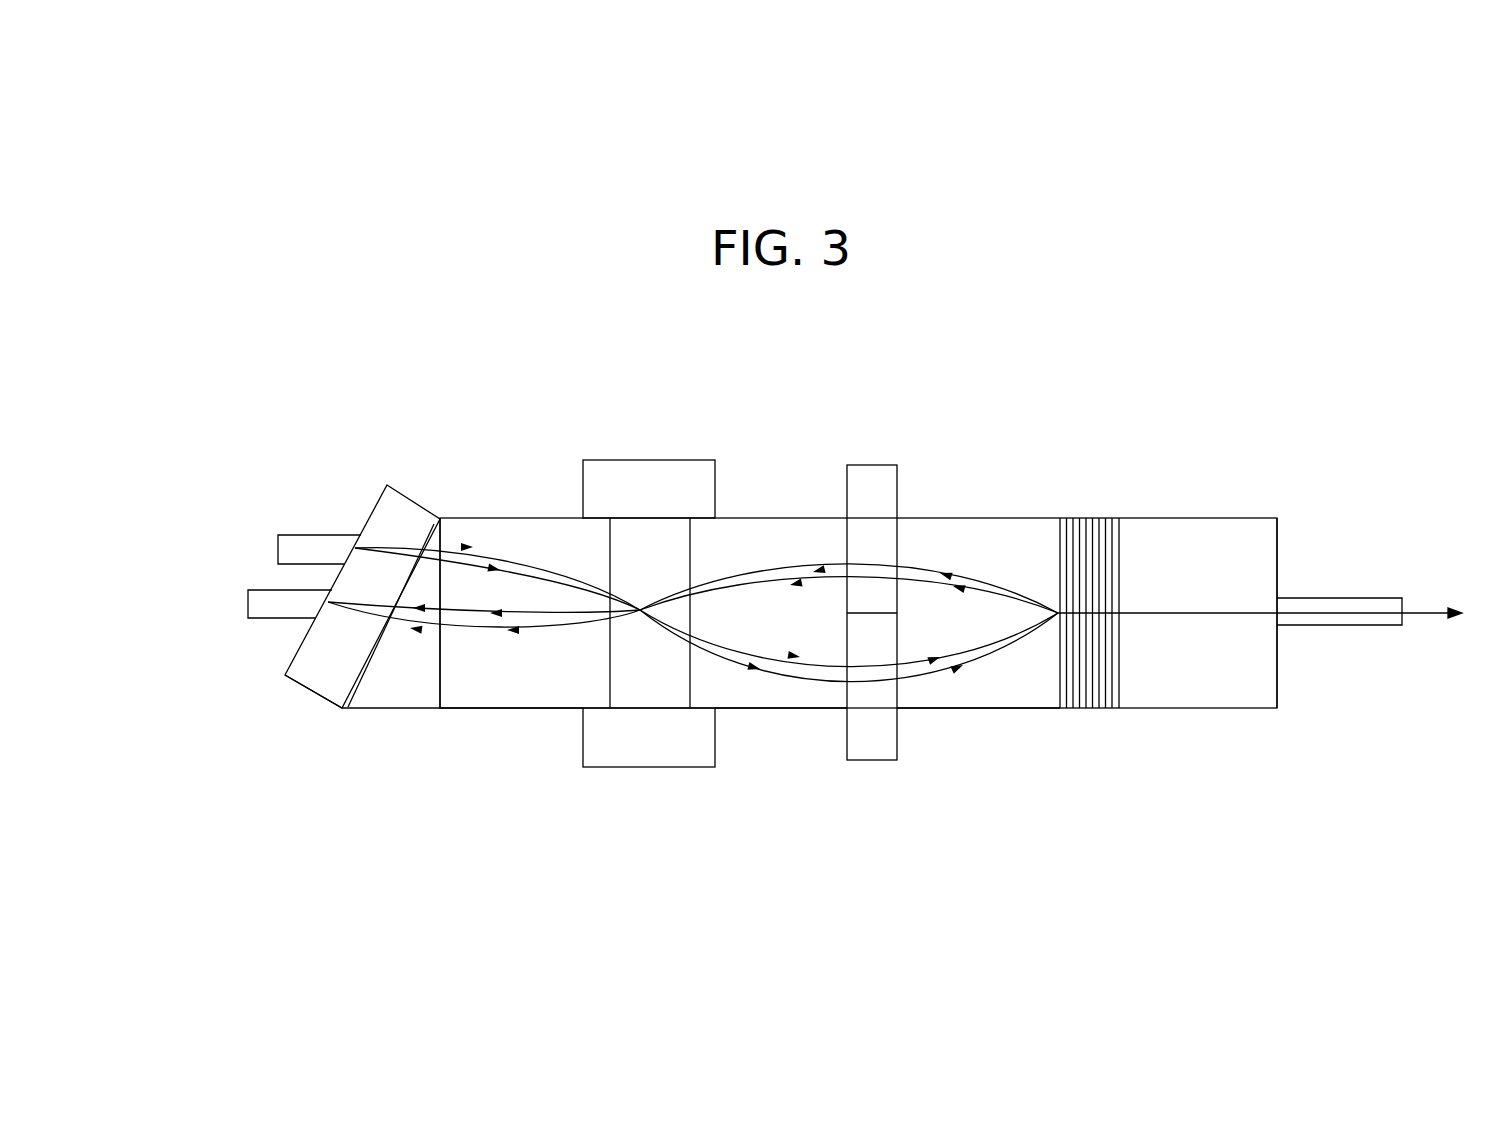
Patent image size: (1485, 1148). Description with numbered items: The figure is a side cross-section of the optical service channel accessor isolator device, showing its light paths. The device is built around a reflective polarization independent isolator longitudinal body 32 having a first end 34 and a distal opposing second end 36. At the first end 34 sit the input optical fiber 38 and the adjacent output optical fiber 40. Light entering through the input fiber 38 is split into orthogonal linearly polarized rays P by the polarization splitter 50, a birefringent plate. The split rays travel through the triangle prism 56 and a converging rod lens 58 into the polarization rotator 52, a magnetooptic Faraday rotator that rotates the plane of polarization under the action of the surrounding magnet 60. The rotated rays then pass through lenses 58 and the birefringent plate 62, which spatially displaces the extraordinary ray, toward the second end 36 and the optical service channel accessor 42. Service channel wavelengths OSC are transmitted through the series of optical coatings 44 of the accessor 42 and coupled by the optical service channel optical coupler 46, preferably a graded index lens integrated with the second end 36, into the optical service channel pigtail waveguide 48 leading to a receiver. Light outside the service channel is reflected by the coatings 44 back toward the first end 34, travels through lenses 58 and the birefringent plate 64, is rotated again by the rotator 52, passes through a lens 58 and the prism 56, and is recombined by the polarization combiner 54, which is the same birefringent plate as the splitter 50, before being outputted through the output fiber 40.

The isolator longitudinal body 32 is at (783, 373).
The first end 34 is at (386, 393).
The second end 36 is at (1097, 400).
The input optical fiber 38 is at (250, 550).
The output optical fiber 40 is at (229, 603).
The optical service channel accessor 42 is at (1148, 800).
The series of optical coatings 44 is at (1075, 743).
The optical service channel optical coupler 46 is at (1255, 710).
The optical service channel pigtail waveguide 48 is at (1358, 627).
The polarization splitter 50 is at (417, 502).
The polarization rotator 52 is at (692, 563).
The polarization combiner 54 is at (313, 695).
The triangle prism 56 is at (390, 710).
The converging rod lens 58 is at (498, 712).
The magnet 60 is at (653, 460).
The birefringent plate 62 is at (875, 762).
The birefringent plate 64 is at (875, 463).
The orthogonal linearly polarized rays P is at (408, 540).
The optical service channel wavelengths OSC is at (1192, 613).